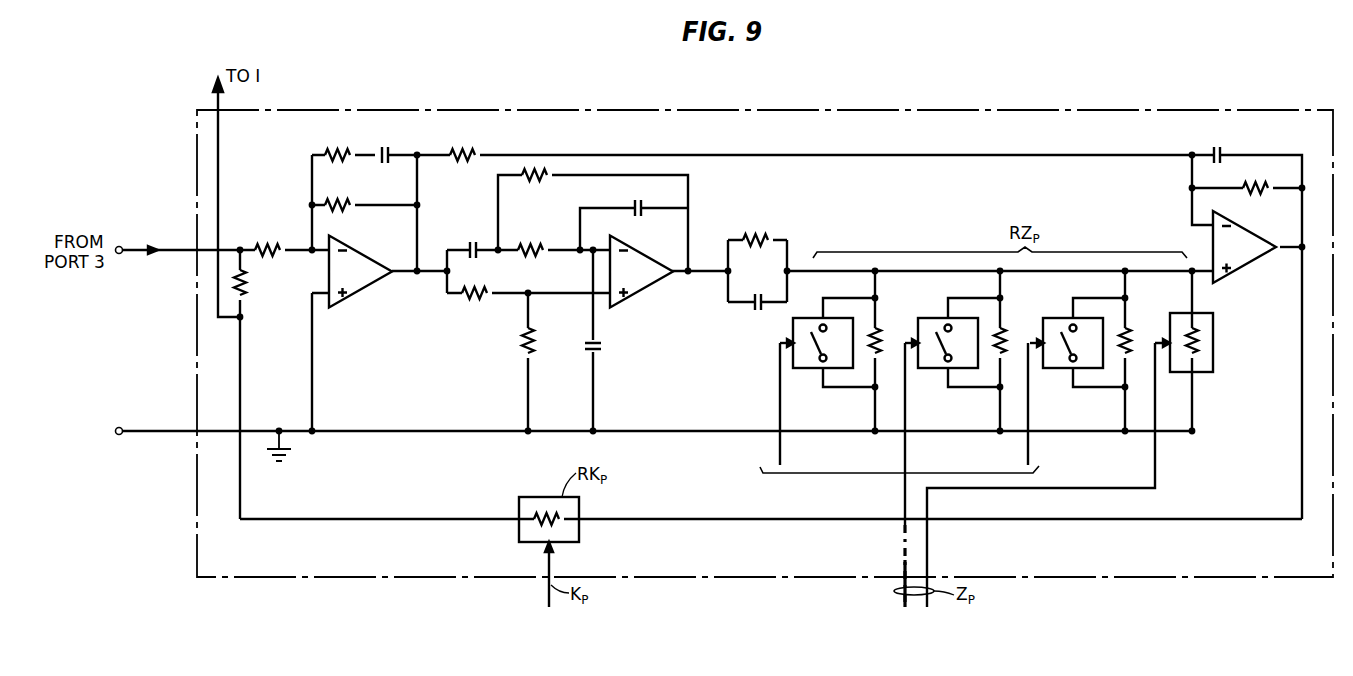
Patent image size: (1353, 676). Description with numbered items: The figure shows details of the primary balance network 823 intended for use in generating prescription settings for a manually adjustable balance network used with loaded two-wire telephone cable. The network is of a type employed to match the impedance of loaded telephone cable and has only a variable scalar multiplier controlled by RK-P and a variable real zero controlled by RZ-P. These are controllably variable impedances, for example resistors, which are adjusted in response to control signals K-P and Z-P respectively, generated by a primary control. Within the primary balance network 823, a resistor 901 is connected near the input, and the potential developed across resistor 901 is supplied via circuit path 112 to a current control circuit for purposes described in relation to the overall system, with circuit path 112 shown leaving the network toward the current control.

The circuit path 112 is at (212, 106).
The resistor 901 is at (248, 296).
The primary balance network 823 is at (1289, 110).